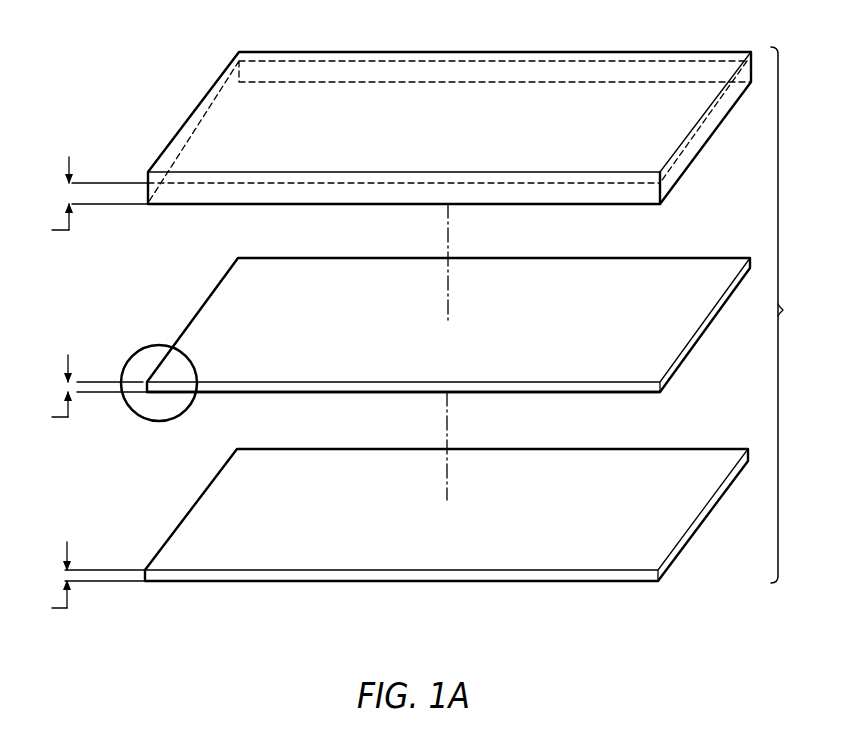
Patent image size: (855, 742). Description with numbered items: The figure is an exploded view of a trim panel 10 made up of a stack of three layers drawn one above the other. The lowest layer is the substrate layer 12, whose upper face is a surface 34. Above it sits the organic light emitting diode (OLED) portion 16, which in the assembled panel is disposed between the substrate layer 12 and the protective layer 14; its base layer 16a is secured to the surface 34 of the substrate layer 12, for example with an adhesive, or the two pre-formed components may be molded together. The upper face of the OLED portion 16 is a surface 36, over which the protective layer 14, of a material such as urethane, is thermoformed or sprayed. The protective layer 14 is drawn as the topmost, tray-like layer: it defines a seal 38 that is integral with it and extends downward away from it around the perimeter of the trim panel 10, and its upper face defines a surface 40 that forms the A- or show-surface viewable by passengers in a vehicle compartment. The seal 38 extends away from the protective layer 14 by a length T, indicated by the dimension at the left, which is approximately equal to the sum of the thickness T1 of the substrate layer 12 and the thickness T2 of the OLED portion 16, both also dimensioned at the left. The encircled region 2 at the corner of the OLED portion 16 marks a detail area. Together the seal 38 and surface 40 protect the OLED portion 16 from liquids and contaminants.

The trim panel 10 is at (791, 315).
The substrate layer 12 is at (430, 515).
The protective layer 14 is at (437, 115).
The organic light emitting diode (OLED) portion 16 is at (431, 331).
The base layer 16a is at (637, 393).
The detail region 2 is at (132, 358).
The surface 34 is at (554, 524).
The surface 36 is at (556, 336).
The seal 38 is at (697, 143).
The surface 40 is at (556, 131).
The length T is at (93, 200).
The thickness T1 is at (86, 580).
The thickness T2 is at (87, 391).